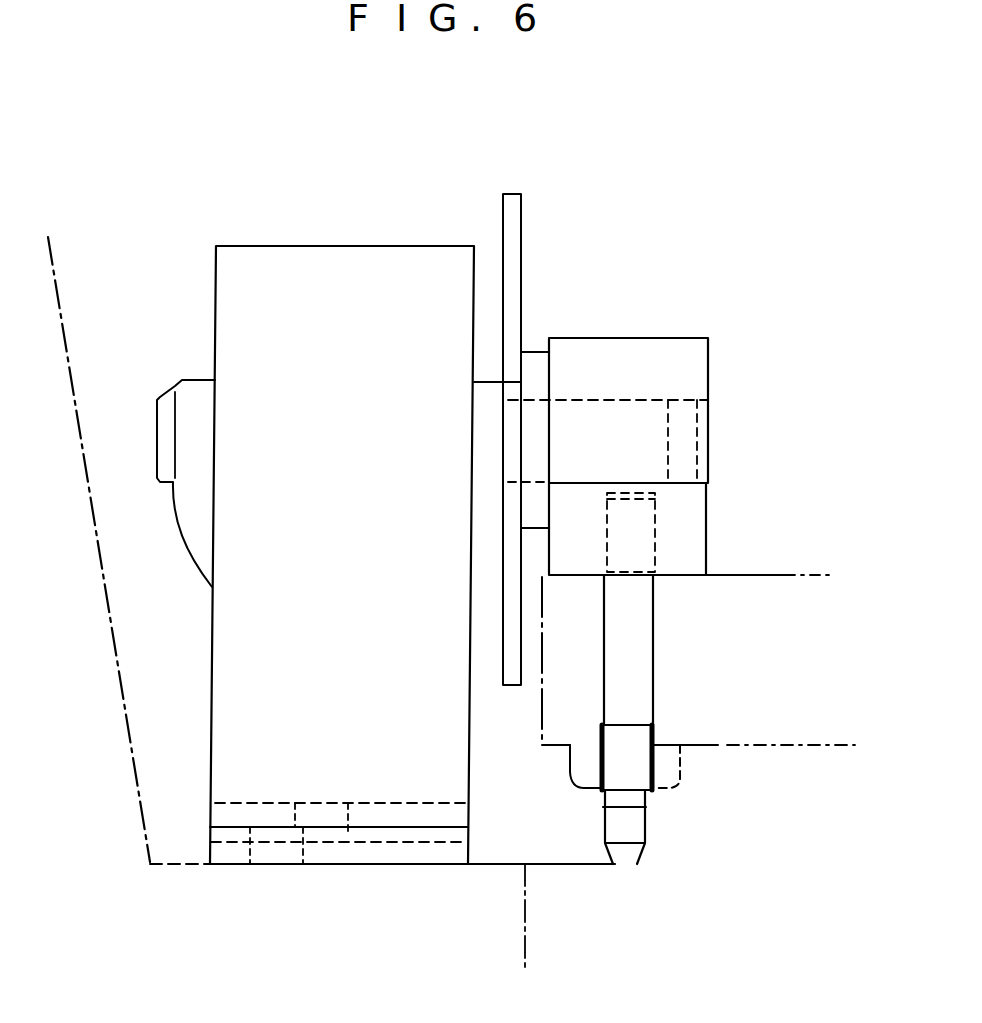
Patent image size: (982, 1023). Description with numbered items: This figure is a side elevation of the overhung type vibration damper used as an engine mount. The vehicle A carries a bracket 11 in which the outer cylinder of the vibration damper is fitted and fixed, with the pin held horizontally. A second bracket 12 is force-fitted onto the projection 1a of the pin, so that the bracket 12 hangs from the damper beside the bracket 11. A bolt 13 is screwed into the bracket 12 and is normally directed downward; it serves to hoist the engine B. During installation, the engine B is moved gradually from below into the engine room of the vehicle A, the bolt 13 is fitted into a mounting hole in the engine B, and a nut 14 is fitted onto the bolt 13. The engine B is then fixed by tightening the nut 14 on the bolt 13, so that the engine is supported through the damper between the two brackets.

The bracket 11 is at (326, 267).
The bracket 12 is at (690, 358).
The projection 1a is at (603, 405).
The bolt 13 is at (640, 683).
The nut 14 is at (668, 782).
The vehicle A is at (48, 353).
The engine B is at (760, 600).